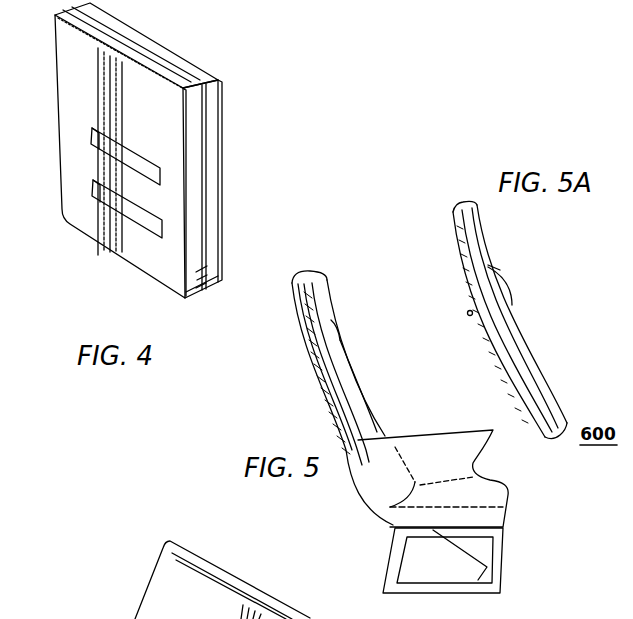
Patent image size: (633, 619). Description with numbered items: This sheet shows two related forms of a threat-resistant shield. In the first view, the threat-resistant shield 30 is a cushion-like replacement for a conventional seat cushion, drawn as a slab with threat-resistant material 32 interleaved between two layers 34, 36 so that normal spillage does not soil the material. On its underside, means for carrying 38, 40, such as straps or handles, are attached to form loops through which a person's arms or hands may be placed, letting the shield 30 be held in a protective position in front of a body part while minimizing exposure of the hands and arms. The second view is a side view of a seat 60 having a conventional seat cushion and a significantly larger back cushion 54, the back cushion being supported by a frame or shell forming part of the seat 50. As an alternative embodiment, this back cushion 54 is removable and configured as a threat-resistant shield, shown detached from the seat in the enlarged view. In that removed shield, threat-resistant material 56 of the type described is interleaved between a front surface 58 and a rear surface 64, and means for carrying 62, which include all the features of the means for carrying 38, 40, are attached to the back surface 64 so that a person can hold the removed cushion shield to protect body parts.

In FIG. 4, the threat-resistant shield 30 is at (143, 169).
In FIG. 4, the threat-resistant material 32 is at (207, 230).
In FIG. 4, the layer 34 is at (218, 180).
In FIG. 4, the layer 36 is at (197, 287).
In FIG. 4, the means for carrying 38 is at (115, 210).
In FIG. 4, the means for carrying 40 is at (97, 147).
In FIG. 5, the seat 50 is at (412, 414).
In FIG. 5, the back cushion 54 is at (337, 327).
In FIG. 5A, the back cushion 54 is at (520, 307).
In FIG. 5, the threat-resistant material 56 is at (305, 275).
In FIG. 5A, the threat-resistant material 56 is at (465, 202).
In FIG. 5, the front surface 58 is at (329, 380).
In FIG. 5A, the front surface 58 is at (498, 293).
In FIG. 5, the seat 60 is at (312, 377).
In FIG. 5A, the seat 60 is at (503, 370).
In FIG. 5, the means for carrying 62 is at (510, 495).
In FIG. 5A, the means for carrying 62 is at (453, 232).
In FIG. 5, the rear surface 64 is at (298, 327).